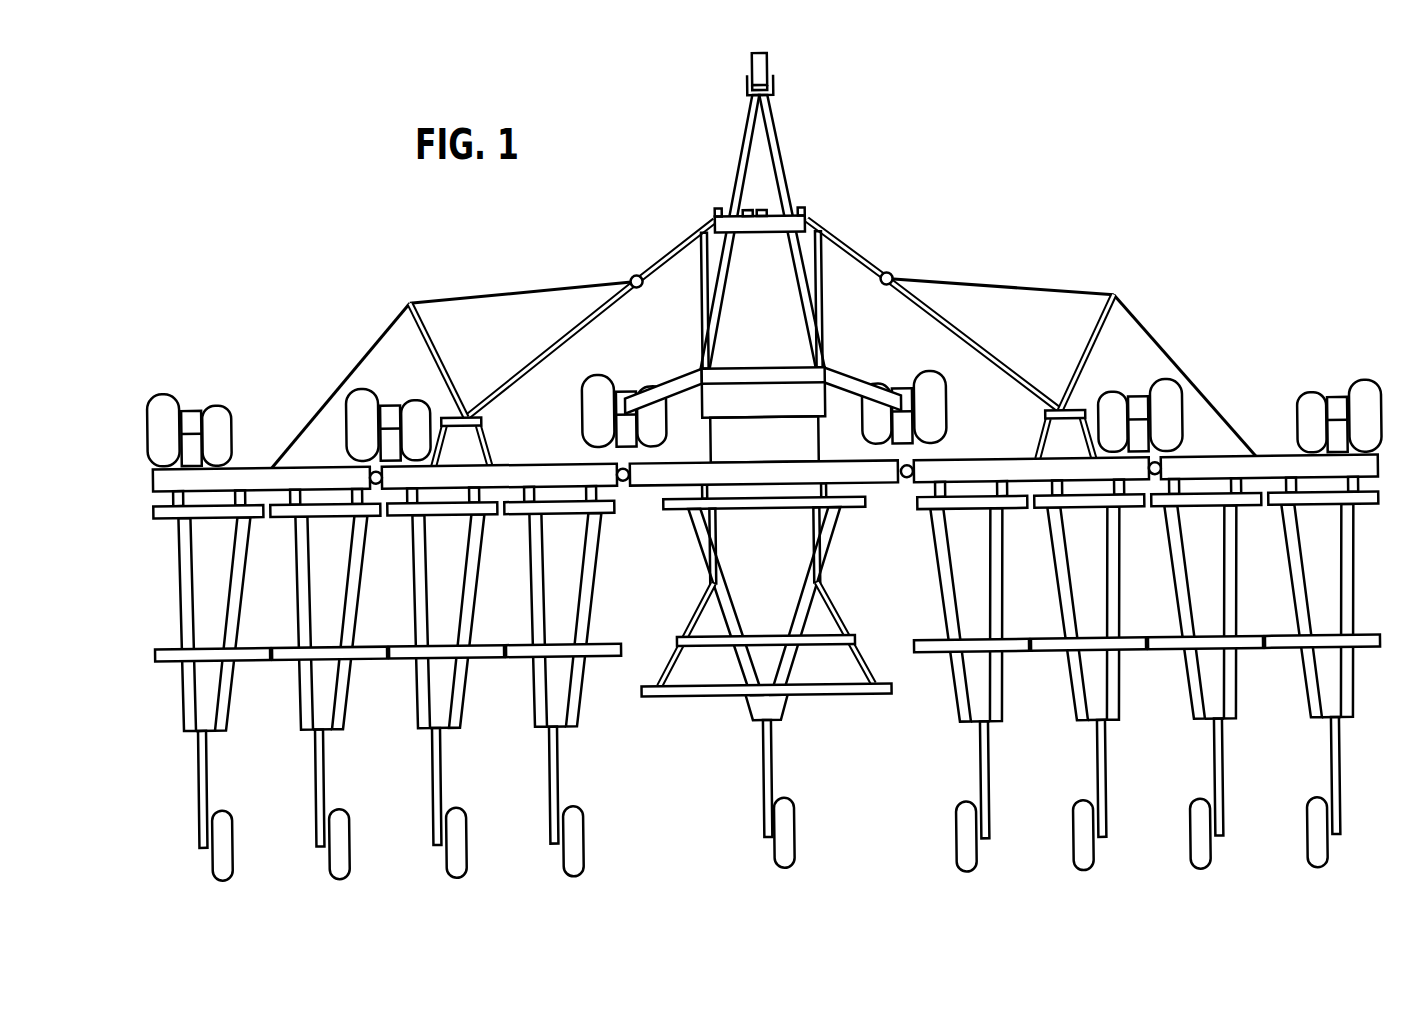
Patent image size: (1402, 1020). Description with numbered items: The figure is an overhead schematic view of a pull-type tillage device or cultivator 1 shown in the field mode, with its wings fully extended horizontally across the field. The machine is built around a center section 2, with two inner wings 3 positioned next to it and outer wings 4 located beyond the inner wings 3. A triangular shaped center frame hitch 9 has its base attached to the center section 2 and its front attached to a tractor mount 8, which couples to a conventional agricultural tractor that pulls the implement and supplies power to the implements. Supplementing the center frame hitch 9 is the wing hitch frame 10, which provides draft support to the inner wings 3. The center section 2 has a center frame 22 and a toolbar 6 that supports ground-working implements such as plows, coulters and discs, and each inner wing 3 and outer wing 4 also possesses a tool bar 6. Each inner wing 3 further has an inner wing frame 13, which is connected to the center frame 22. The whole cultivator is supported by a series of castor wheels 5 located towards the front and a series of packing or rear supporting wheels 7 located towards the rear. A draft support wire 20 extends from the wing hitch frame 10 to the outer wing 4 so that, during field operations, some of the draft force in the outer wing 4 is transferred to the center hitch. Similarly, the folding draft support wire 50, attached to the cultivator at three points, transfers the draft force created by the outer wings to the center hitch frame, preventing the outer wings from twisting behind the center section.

The tillage device or cultivator 1 is at (744, 480).
The center section 2 is at (694, 737).
The inner wings 3 is at (597, 898).
The outer wings 4 is at (744, 694).
The castor wheels 5 is at (218, 406).
The toolbar 6 is at (285, 649).
The packing or rear supporting wheels 7 is at (331, 812).
The tractor mount 8 is at (767, 66).
The center frame hitch 9 is at (778, 138).
The wing hitch frame 10 is at (602, 305).
The inner wing frame 13 is at (520, 467).
The draft support wire 20 is at (873, 471).
The center frame 22 is at (665, 474).
The folding draft support wire 50 is at (401, 309).